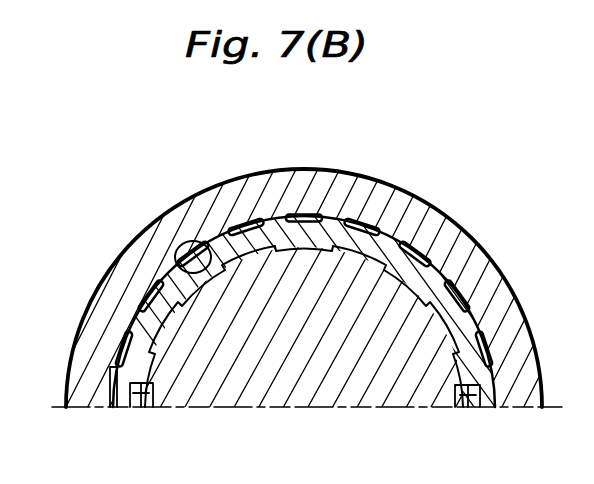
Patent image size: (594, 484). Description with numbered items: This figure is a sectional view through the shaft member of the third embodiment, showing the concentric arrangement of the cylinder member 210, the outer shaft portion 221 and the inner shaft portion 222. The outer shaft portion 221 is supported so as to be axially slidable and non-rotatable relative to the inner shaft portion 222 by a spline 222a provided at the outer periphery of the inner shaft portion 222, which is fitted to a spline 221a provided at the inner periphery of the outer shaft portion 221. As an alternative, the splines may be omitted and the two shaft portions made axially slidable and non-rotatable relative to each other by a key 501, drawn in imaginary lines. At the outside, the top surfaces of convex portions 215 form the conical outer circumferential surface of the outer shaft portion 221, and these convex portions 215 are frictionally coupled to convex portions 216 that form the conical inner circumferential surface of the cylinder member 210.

The cylinder member 210 is at (300, 170).
The convex portions 215 is at (186, 256).
The convex portions 216 is at (195, 241).
The outer shaft portion 221 is at (387, 250).
The spline 221a is at (420, 245).
The inner shaft portion 222 is at (327, 373).
The spline 222a is at (458, 272).
The key 501 is at (150, 400).